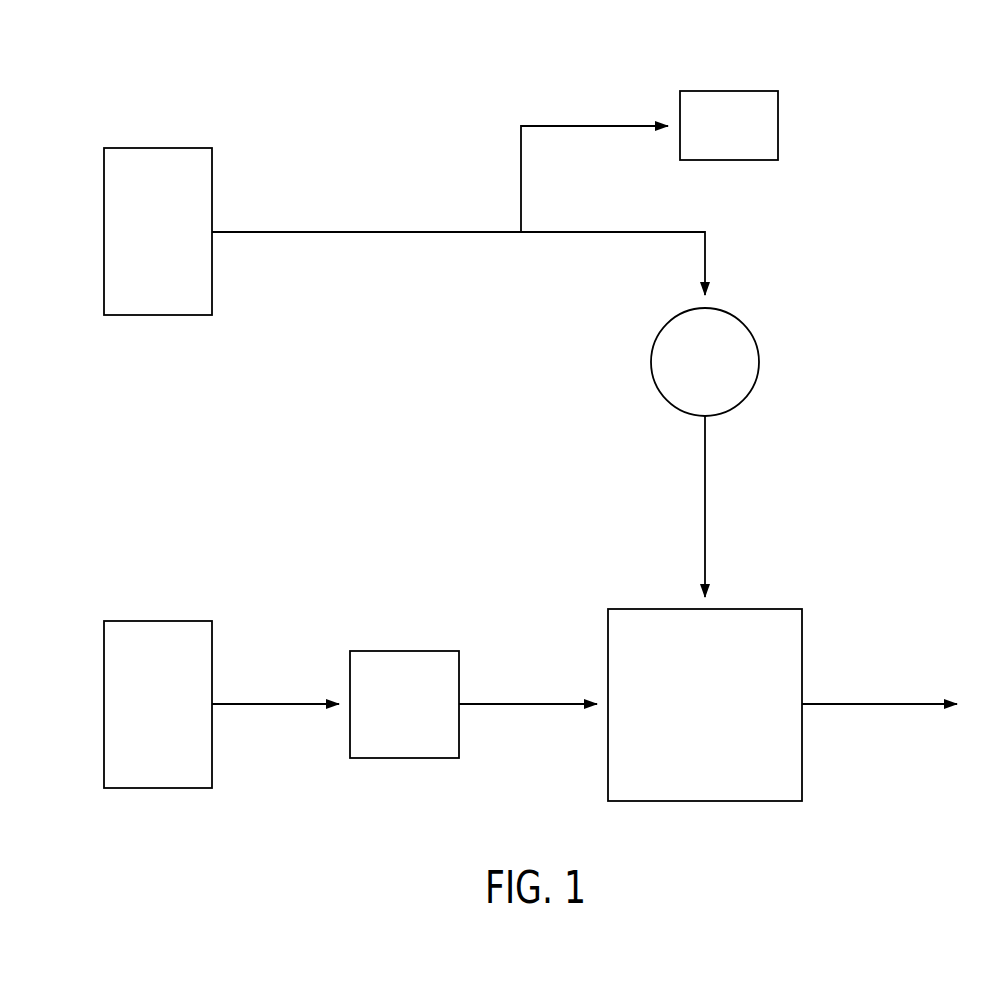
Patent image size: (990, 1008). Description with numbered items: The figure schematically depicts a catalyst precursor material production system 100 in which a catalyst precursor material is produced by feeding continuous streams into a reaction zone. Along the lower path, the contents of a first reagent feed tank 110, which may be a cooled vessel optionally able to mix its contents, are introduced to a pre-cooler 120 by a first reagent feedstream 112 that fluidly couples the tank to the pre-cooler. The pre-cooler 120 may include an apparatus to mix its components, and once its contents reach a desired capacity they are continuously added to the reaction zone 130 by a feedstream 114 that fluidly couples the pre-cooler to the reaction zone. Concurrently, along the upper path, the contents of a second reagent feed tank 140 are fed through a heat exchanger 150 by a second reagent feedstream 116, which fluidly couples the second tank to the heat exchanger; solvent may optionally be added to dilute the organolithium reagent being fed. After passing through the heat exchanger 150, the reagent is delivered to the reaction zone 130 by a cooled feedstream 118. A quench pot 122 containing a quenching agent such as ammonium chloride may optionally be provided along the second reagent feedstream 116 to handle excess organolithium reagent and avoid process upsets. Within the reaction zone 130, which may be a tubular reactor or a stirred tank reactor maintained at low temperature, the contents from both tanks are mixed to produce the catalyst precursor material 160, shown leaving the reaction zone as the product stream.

The catalyst precursor material production system 100 is at (905, 203).
The first reagent feed tank 110 is at (158, 621).
The first reagent feedstream 112 is at (273, 703).
The feedstream 114 is at (513, 703).
The second reagent feedstream 116 is at (382, 231).
The cooled feedstream 118 is at (707, 500).
The pre-cooler 120 is at (403, 651).
The quench pot 122 is at (730, 91).
The reaction zone 130 is at (803, 770).
The second reagent feed tank 140 is at (155, 148).
The heat exchanger 150 is at (743, 321).
The catalyst precursor material 160 is at (878, 703).